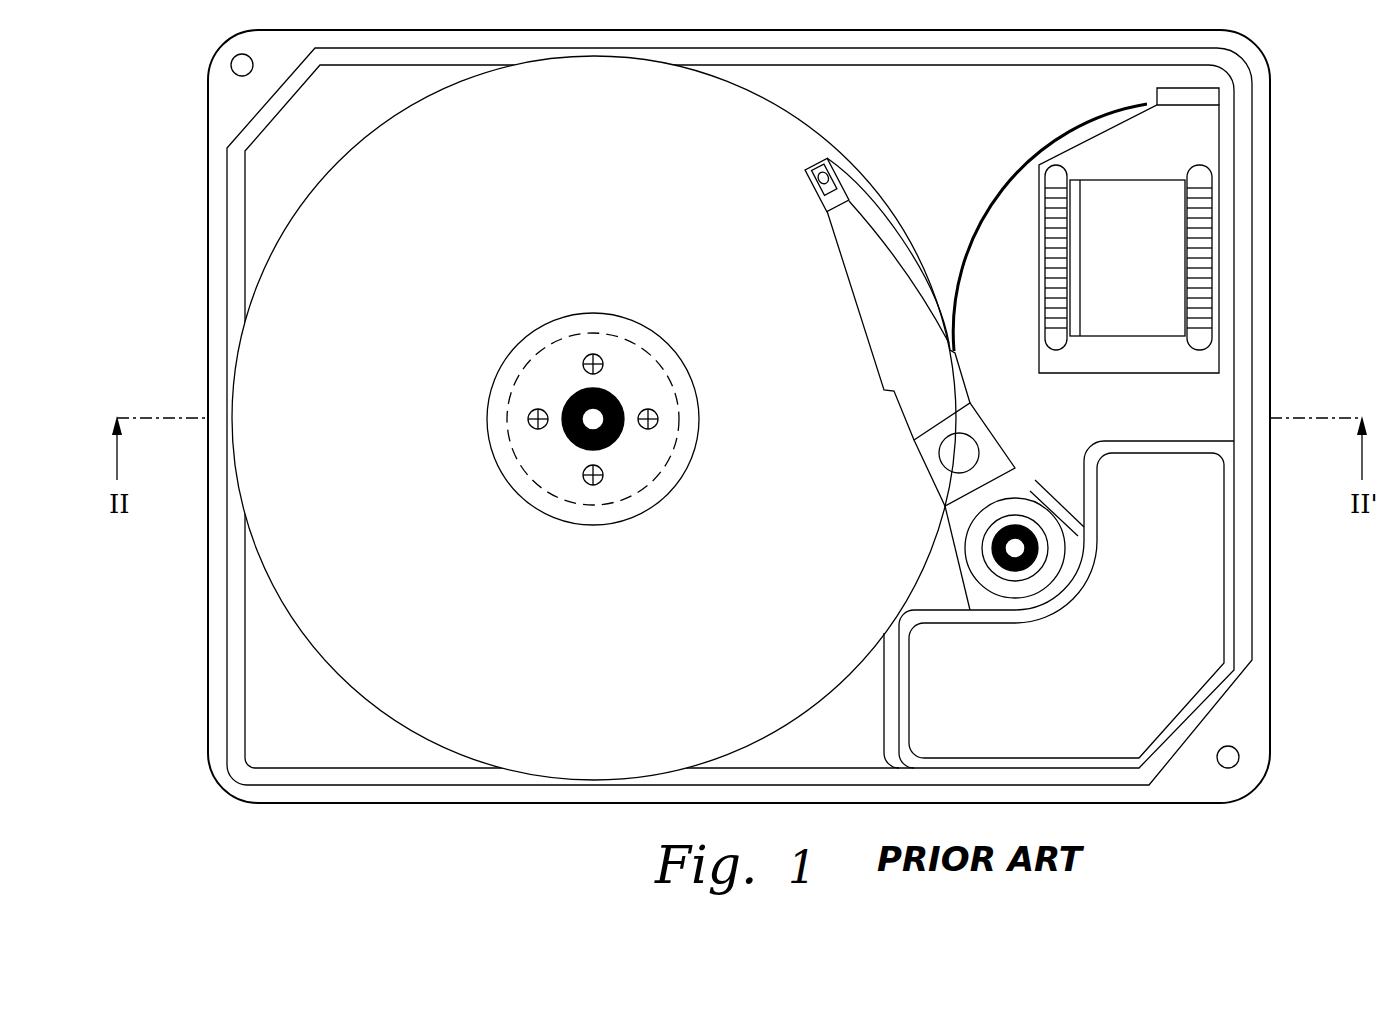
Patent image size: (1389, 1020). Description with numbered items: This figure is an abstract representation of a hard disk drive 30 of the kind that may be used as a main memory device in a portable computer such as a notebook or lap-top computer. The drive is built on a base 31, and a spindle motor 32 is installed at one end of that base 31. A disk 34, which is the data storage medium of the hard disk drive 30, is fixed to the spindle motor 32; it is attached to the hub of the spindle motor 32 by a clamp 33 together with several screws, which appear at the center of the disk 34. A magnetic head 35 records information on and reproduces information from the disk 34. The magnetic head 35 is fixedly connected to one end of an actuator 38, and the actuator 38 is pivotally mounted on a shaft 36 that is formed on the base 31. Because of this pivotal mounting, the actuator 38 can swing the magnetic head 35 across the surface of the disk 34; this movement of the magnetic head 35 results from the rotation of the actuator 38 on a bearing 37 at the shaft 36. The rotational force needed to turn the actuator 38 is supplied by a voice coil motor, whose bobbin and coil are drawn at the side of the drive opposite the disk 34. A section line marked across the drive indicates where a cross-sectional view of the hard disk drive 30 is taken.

The hard disk drive 30 is at (116, 176).
The base 31 is at (328, 722).
The spindle motor 32 is at (672, 386).
The clamp 33 is at (620, 360).
The disk 34 is at (428, 264).
The magnetic head 35 is at (818, 158).
The shaft 36 is at (1020, 522).
The bearing 37 is at (990, 532).
The actuator 38 is at (944, 347).